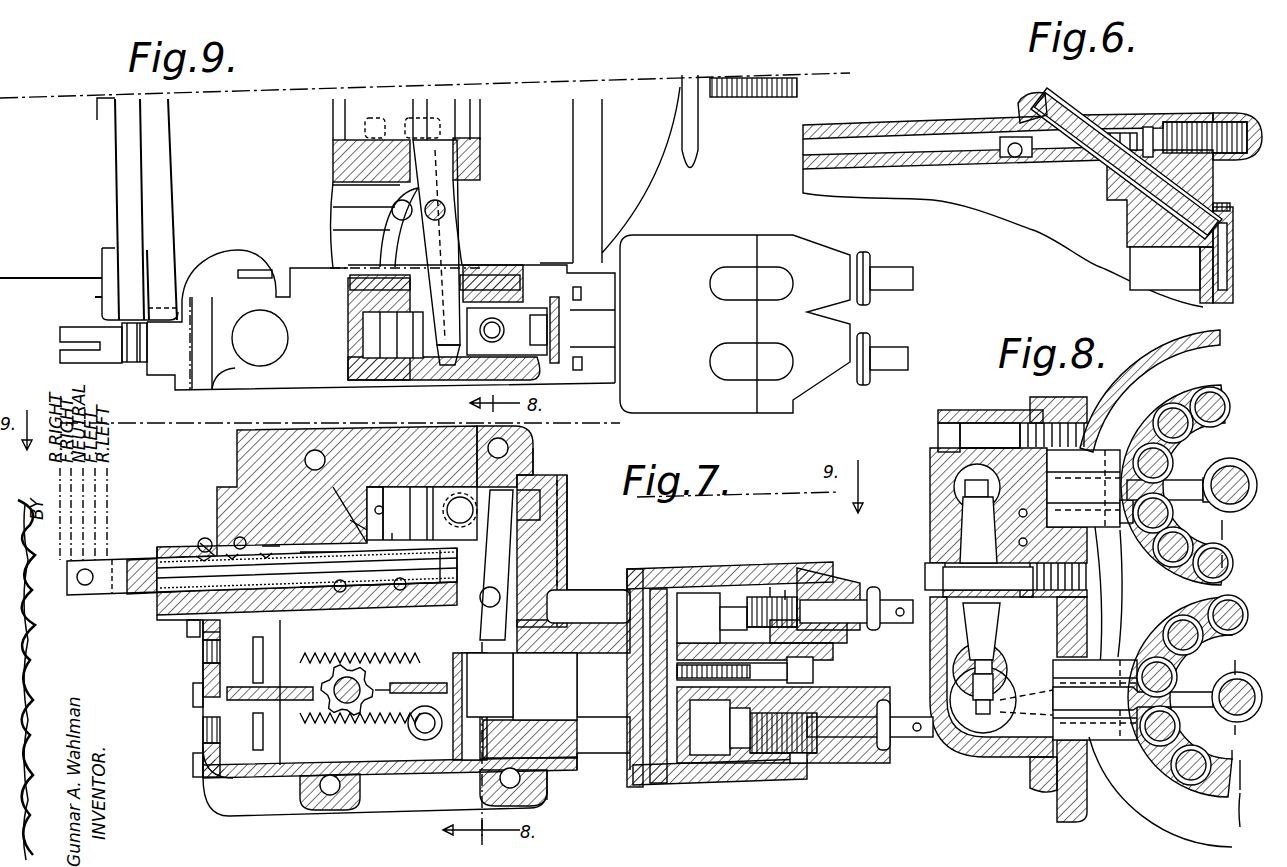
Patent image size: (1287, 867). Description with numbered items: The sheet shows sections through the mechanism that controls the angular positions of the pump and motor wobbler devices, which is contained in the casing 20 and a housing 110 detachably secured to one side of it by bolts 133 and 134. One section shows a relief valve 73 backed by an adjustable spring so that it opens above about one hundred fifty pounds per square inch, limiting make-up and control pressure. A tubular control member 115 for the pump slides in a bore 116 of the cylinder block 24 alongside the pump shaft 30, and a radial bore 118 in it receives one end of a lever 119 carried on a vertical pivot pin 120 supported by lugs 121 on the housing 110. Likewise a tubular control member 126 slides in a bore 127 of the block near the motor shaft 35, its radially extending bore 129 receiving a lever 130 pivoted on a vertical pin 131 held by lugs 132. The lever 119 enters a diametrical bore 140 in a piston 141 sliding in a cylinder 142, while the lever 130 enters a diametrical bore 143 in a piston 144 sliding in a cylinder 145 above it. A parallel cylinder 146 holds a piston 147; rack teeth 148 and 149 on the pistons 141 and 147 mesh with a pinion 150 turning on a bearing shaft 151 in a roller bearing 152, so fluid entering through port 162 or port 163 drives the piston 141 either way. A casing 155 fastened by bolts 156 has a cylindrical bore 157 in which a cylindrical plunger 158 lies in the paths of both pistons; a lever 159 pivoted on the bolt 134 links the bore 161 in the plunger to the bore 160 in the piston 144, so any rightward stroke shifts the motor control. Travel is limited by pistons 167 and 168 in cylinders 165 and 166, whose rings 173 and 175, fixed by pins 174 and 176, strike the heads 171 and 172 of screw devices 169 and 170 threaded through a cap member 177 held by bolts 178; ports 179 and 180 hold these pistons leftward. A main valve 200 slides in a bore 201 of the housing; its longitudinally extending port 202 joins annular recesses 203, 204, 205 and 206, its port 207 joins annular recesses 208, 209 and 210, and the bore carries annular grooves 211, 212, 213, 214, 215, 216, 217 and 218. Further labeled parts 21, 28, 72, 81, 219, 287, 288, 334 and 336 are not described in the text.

In FIG. 9, the casing 20 is at (256, 108).
In FIG. 6, the casing 20 is at (1100, 113).
In FIG. 8, the casing 20 is at (1065, 790).
In FIG. 9, the flywheel 21 is at (645, 187).
In FIG. 8, the flywheel 21 is at (1173, 405).
In FIG. 8, the cylinder block 24 is at (1220, 395).
In FIG. 8, the flywheel hub 28 is at (1195, 780).
In FIG. 9, the pump shaft 30 is at (752, 100).
In FIG. 8, the pump shaft 30 is at (1245, 690).
In FIG. 8, the motor shaft 35 is at (1240, 470).
In FIG. 6, the adjusting screw 72 is at (1190, 110).
In FIG. 6, the relief valve 73 is at (1147, 127).
In FIG. 9, the control shaft 81 is at (40, 262).
In FIG. 9, the housing 110 is at (350, 383).
In FIG. 8, the housing 110 is at (1000, 412).
In FIG. 7, the housing 110 is at (410, 810).
In FIG. 8, the tubular control member 115 is at (1240, 730).
In FIG. 8, the bore 116 is at (1238, 755).
In FIG. 8, the radial bore 118 is at (1240, 668).
In FIG. 9, the lever 119 is at (333, 176).
In FIG. 8, the lever 119 is at (1125, 657).
In FIG. 9, the vertical pivot pin 120 is at (333, 206).
In FIG. 8, the vertical pivot pin 120 is at (1120, 660).
In FIG. 9, the lugs 121 is at (333, 236).
In FIG. 8, the lugs 121 is at (985, 745).
In FIG. 8, the tubular control member 126 is at (1225, 530).
In FIG. 8, the bore 127 is at (1225, 560).
In FIG. 8, the radially extending bore 129 is at (1215, 450).
In FIG. 9, the lever 130 is at (440, 168).
In FIG. 8, the lever 130 is at (1105, 450).
In FIG. 9, the vertical pin 131 is at (447, 210).
In FIG. 8, the vertical pin 131 is at (1115, 530).
In FIG. 9, the lugs 132 is at (462, 250).
In FIG. 8, the lugs 132 is at (1060, 405).
In FIG. 8, the bolt 133 is at (965, 415).
In FIG. 8, the bolt 134 is at (930, 578).
In FIG. 7, the bolt 134 is at (565, 560).
In FIG. 7, the diametrical bore 140 is at (425, 740).
In FIG. 7, the piston 141 is at (370, 775).
In FIG. 7, the cylinder 142 is at (262, 780).
In FIG. 9, the diametrical bore 143 is at (442, 382).
In FIG. 7, the diametrical bore 143 is at (540, 470).
In FIG. 9, the piston 144 is at (530, 333).
In FIG. 8, the piston 144 is at (960, 477).
In FIG. 7, the piston 144 is at (458, 500).
In FIG. 9, the cylinder 145 is at (395, 362).
In FIG. 7, the cylinder 145 is at (395, 487).
In FIG. 7, the cylinder 146 is at (203, 670).
In FIG. 8, the piston 147 is at (1000, 620).
In FIG. 7, the piston 147 is at (205, 632).
In FIG. 7, the rack teeth 148 is at (420, 735).
In FIG. 7, the rack teeth 149 is at (368, 653).
In FIG. 7, the pinion 150 is at (335, 665).
In FIG. 7, the bearing shaft 151 is at (385, 665).
In FIG. 7, the roller bearing 152 is at (395, 685).
In FIG. 9, the casing 155 is at (705, 245).
In FIG. 7, the casing 155 is at (625, 780).
In FIG. 9, the bolts 156 is at (580, 294).
In FIG. 7, the cylindrical bore 157 is at (575, 765).
In FIG. 8, the cylindrical plunger 158 is at (1000, 640).
In FIG. 7, the cylindrical plunger 158 is at (590, 610).
In FIG. 8, the lever 159 is at (940, 540).
In FIG. 7, the lever 159 is at (560, 545).
In FIG. 9, the bore 160 is at (505, 327).
In FIG. 8, the bore 160 is at (955, 488).
In FIG. 7, the bore 160 is at (540, 480).
In FIG. 8, the bore 161 is at (1000, 660).
In FIG. 7, the bore 161 is at (515, 675).
In FIG. 7, the port 162 is at (203, 722).
In FIG. 7, the port 163 is at (203, 652).
In FIG. 7, the cylinder 165 is at (710, 795).
In FIG. 7, the cylinder 166 is at (715, 590).
In FIG. 7, the piston 167 is at (665, 780).
In FIG. 7, the piston 168 is at (680, 595).
In FIG. 9, the screw device 169 is at (890, 270).
In FIG. 7, the screw device 169 is at (825, 780).
In FIG. 9, the screw device 170 is at (893, 350).
In FIG. 7, the screw device 170 is at (800, 590).
In FIG. 7, the head 171 is at (740, 780).
In FIG. 7, the head 172 is at (760, 590).
In FIG. 7, the ring 173 is at (757, 795).
In FIG. 7, the pin 174 is at (800, 690).
In FIG. 7, the ring 175 is at (775, 565).
In FIG. 7, the pin 176 is at (755, 600).
In FIG. 9, the cap member 177 is at (825, 252).
In FIG. 7, the cap member 177 is at (815, 580).
In FIG. 7, the bolts 178 is at (813, 670).
In FIG. 7, the port 179 is at (790, 795).
In FIG. 7, the port 180 is at (780, 590).
In FIG. 9, the main valve 200 is at (127, 362).
In FIG. 7, the main valve 200 is at (125, 560).
In FIG. 7, the bore 201 is at (375, 498).
In FIG. 7, the longitudinally extending port 202 is at (465, 558).
In FIG. 7, the annular recess 203 is at (200, 556).
In FIG. 7, the annular recess 204 is at (215, 525).
In FIG. 7, the annular recess 205 is at (362, 552).
In FIG. 7, the annular recess 206 is at (350, 520).
In FIG. 7, the longitudinally extending port 207 is at (490, 597).
In FIG. 7, the annular recess 208 is at (165, 612).
In FIG. 7, the annular recess 209 is at (330, 660).
In FIG. 7, the annular recess 210 is at (398, 588).
In FIG. 7, the annular groove 211 is at (205, 538).
In FIG. 7, the annular groove 212 is at (248, 548).
In FIG. 7, the annular groove 213 is at (272, 546).
In FIG. 7, the annular groove 214 is at (360, 540).
In FIG. 7, the annular groove 215 is at (330, 588).
In FIG. 7, the annular groove 216 is at (370, 588).
In FIG. 7, the annular groove 217 is at (397, 503).
In FIG. 7, the annular groove 218 is at (404, 526).
In FIG. 7, the collar 219 is at (445, 583).
In FIG. 7, the passage 287 is at (540, 795).
In FIG. 7, the passage 288 is at (615, 790).
In FIG. 7, the detent spring 334 is at (208, 505).
In FIG. 7, the seal 336 is at (190, 630).